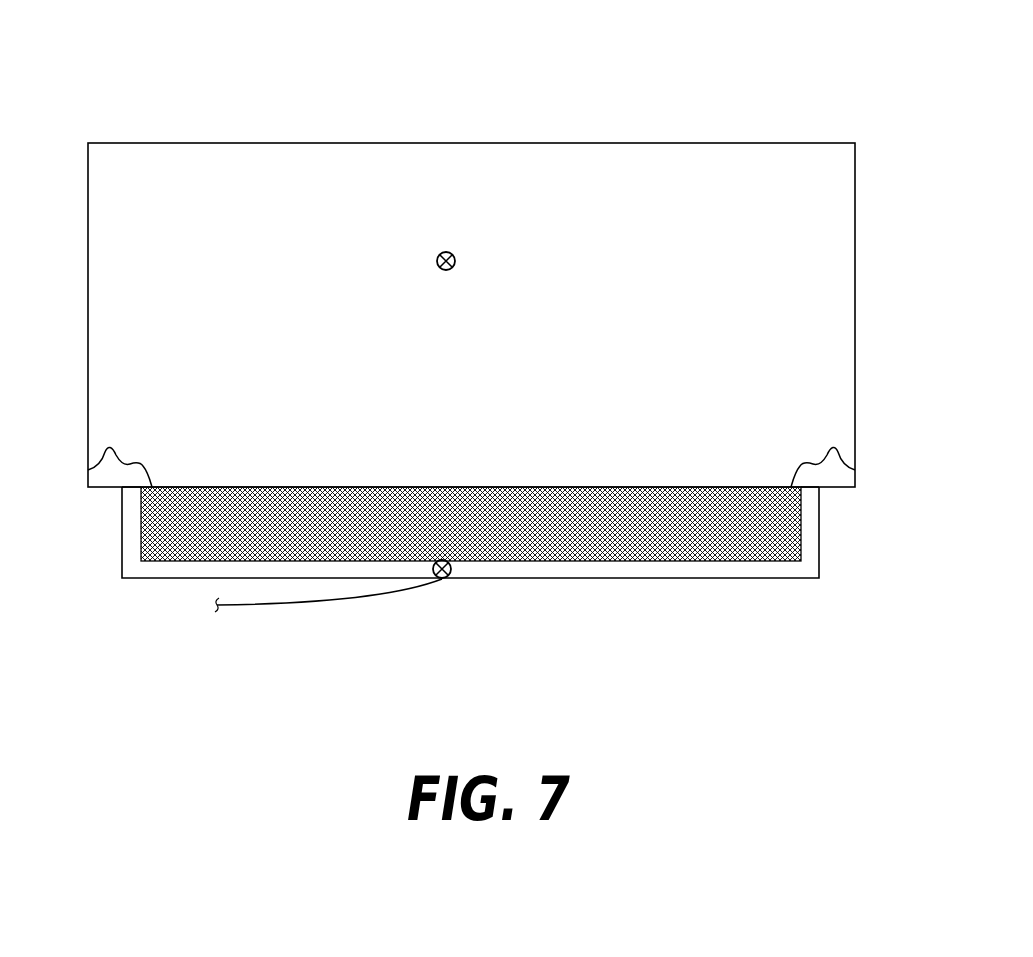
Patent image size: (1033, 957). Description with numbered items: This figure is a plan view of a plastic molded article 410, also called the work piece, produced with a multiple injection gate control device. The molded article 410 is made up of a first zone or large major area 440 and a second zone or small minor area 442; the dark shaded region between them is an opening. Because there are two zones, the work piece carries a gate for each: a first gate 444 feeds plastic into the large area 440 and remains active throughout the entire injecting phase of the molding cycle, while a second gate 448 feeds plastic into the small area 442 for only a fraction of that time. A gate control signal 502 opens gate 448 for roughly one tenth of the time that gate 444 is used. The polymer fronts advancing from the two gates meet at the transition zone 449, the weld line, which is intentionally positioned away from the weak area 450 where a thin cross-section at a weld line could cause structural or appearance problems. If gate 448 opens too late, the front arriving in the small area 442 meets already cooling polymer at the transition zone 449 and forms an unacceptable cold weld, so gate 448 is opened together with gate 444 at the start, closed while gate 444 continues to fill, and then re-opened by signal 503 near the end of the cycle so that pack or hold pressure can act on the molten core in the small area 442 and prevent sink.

The molded article 410 is at (777, 47).
The large area 440 is at (743, 267).
The small area 442 is at (681, 568).
The first gate 444 is at (452, 253).
The second gate 448 is at (449, 578).
The transition zone 449 is at (118, 452).
The weak area 450 is at (117, 494).
The gate control signal 502 is at (306, 624).
The re-open signal 503 is at (250, 593).